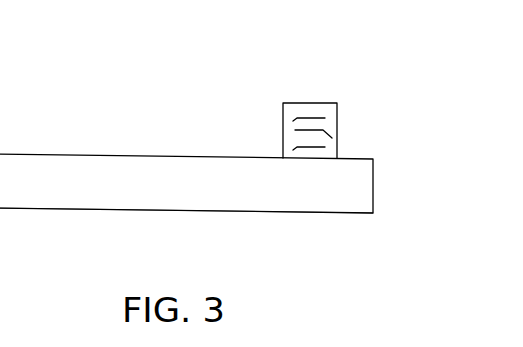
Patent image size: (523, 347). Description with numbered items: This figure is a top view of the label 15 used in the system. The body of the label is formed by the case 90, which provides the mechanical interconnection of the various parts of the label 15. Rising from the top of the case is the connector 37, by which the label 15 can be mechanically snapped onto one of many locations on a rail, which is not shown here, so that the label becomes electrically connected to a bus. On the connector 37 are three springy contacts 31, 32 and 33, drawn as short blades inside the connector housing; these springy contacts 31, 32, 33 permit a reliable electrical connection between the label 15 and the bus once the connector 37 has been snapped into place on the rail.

The label 15 is at (175, 53).
The case 90 is at (27, 210).
The connector 37 is at (303, 102).
The springy contact 31 is at (295, 119).
The springy contact 32 is at (332, 138).
The springy contact 33 is at (295, 148).